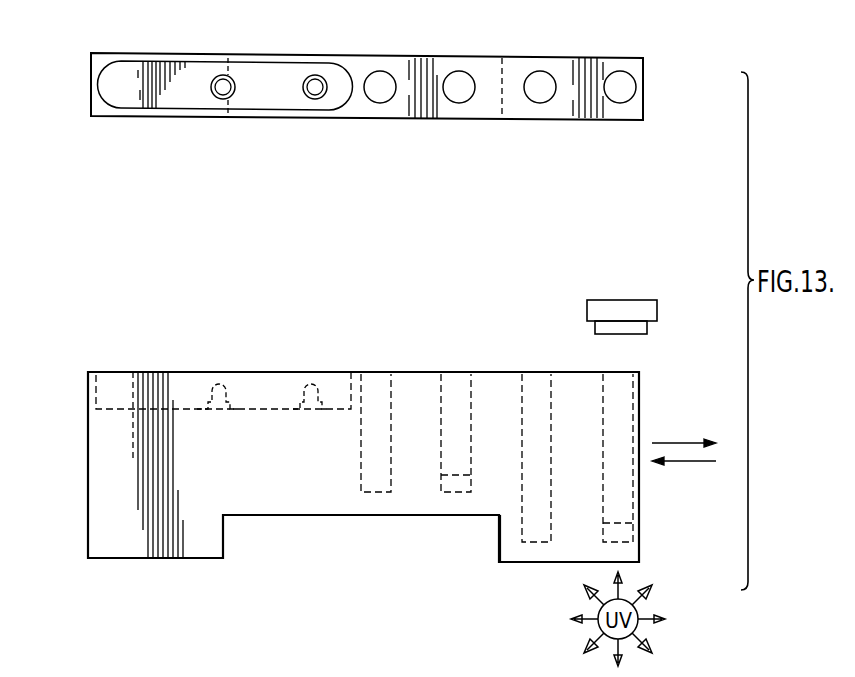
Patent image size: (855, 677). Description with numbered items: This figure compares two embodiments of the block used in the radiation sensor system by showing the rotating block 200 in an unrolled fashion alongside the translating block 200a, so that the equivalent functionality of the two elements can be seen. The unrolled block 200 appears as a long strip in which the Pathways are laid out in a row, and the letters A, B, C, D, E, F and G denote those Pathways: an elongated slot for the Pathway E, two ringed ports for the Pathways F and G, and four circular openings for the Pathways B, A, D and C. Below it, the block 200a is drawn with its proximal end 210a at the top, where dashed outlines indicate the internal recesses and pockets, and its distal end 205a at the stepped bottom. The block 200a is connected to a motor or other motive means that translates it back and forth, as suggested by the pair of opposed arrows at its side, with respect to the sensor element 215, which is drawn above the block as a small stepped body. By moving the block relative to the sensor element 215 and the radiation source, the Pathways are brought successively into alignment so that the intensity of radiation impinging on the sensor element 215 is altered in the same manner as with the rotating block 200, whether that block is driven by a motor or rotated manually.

The block 200 is at (645, 113).
The block 200a is at (98, 486).
The distal end 205a is at (516, 563).
The proximal end 210a is at (175, 371).
The sensor element 215 is at (623, 300).
The Pathway A is at (460, 67).
The Pathway B is at (380, 66).
The Pathway C is at (616, 68).
The Pathway D is at (541, 68).
The Pathway E is at (128, 70).
The Pathway F is at (212, 74).
The Pathway G is at (305, 72).